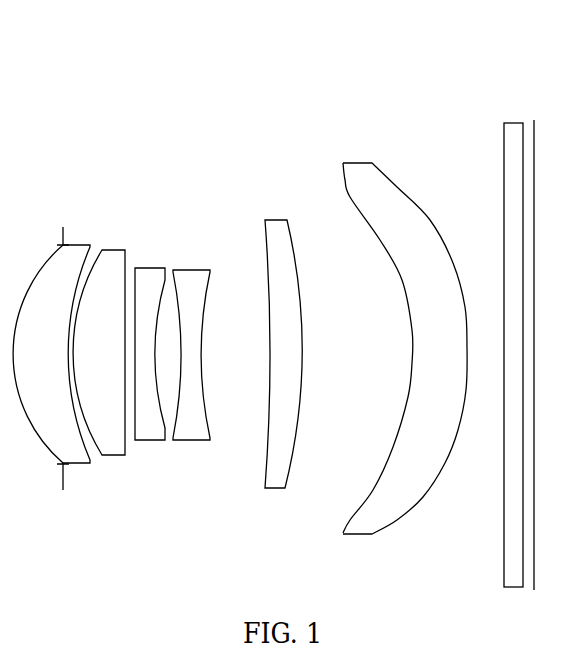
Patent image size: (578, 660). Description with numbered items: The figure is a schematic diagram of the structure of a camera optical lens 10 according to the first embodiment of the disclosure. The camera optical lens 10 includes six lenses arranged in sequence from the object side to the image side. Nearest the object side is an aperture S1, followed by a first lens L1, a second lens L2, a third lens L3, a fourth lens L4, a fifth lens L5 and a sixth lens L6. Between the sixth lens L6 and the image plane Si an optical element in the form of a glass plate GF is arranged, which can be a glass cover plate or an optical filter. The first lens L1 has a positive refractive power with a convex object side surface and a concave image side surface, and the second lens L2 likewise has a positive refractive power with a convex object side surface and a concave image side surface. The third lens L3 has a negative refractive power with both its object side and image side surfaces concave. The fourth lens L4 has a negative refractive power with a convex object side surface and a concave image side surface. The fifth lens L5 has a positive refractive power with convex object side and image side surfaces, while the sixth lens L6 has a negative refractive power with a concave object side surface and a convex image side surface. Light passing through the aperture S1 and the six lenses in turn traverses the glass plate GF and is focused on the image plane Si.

The camera optical lens 10 is at (288, 44).
The aperture S1 is at (49, 358).
The first lens L1 is at (53, 341).
The second lens L2 is at (99, 341).
The third lens L3 is at (151, 342).
The fourth lens L4 is at (191, 342).
The fifth lens L5 is at (283, 341).
The sixth lens L6 is at (405, 335).
The glass plate GF is at (509, 339).
The image plane Si is at (541, 340).